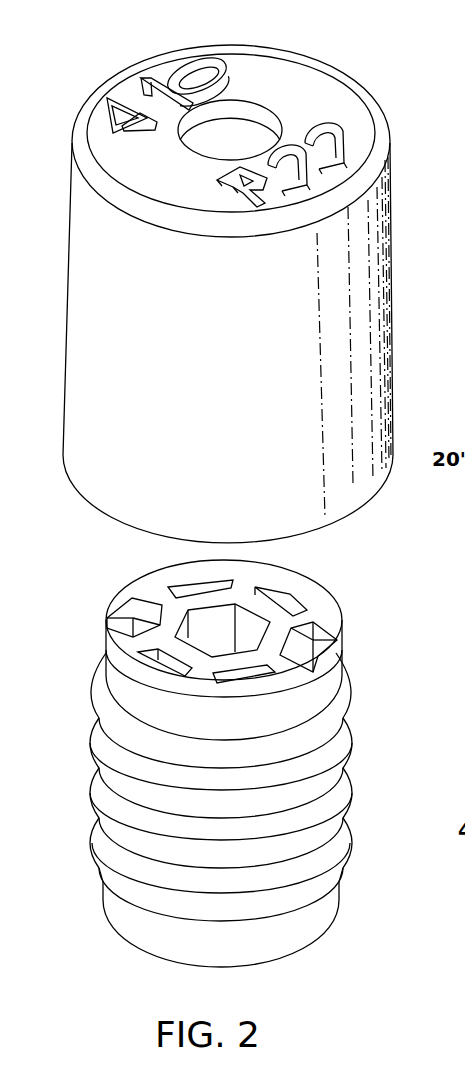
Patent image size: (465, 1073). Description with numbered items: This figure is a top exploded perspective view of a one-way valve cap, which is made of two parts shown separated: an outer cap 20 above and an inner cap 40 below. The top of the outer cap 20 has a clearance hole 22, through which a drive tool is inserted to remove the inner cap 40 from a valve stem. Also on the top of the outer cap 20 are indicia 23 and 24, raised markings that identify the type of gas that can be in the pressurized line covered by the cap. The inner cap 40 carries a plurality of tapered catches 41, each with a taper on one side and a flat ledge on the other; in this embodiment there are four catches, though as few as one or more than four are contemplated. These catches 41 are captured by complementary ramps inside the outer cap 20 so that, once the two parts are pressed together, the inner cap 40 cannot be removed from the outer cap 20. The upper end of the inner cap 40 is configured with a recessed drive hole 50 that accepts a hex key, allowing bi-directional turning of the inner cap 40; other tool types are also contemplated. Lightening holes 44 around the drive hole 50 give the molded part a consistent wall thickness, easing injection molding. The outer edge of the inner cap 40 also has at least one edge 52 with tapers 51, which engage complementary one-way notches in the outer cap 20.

The outer cap 20 is at (391, 240).
The clearance hole 22 is at (277, 110).
The indicia 23 is at (340, 128).
The indicia 24 is at (177, 60).
The inner cap 40 is at (340, 903).
The tapered catches 41 is at (350, 747).
The lightening holes 44 is at (295, 600).
The hex key / recessed drive hole 50 is at (187, 613).
The tapers 51 is at (330, 660).
The edge 52 is at (130, 600).